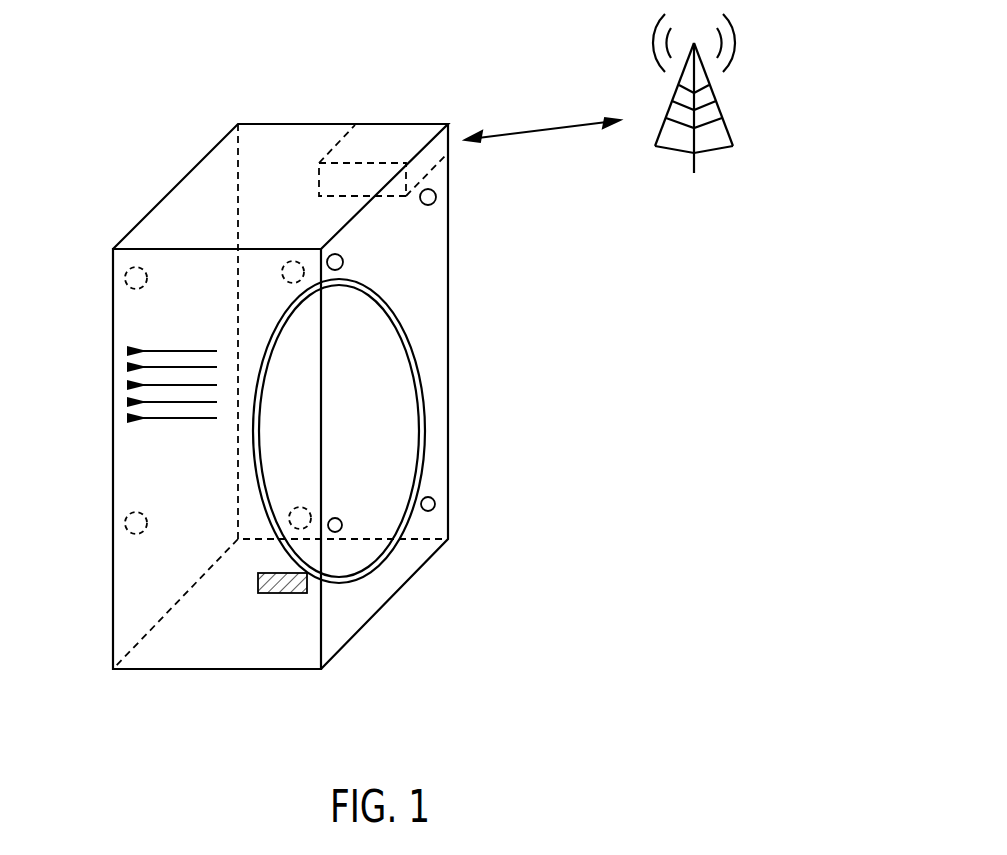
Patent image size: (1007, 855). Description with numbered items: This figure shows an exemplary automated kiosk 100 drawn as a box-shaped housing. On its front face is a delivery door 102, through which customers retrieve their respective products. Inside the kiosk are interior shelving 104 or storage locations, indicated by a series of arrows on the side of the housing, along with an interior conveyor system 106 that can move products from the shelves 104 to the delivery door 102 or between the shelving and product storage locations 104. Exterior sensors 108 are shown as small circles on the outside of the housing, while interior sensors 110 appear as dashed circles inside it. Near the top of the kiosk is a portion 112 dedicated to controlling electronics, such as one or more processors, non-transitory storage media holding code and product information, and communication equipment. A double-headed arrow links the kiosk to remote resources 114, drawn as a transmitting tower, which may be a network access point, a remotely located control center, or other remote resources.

The automated kiosk 100 is at (172, 189).
The delivery door 102 is at (282, 593).
The interior shelving 104 is at (127, 385).
The interior conveyor system 106 is at (424, 405).
The exterior sensors 108 is at (436, 199).
The interior sensors 110 is at (147, 276).
The portion dedicated to controlling electronics 112 is at (406, 135).
The remote resources 114 is at (718, 95).